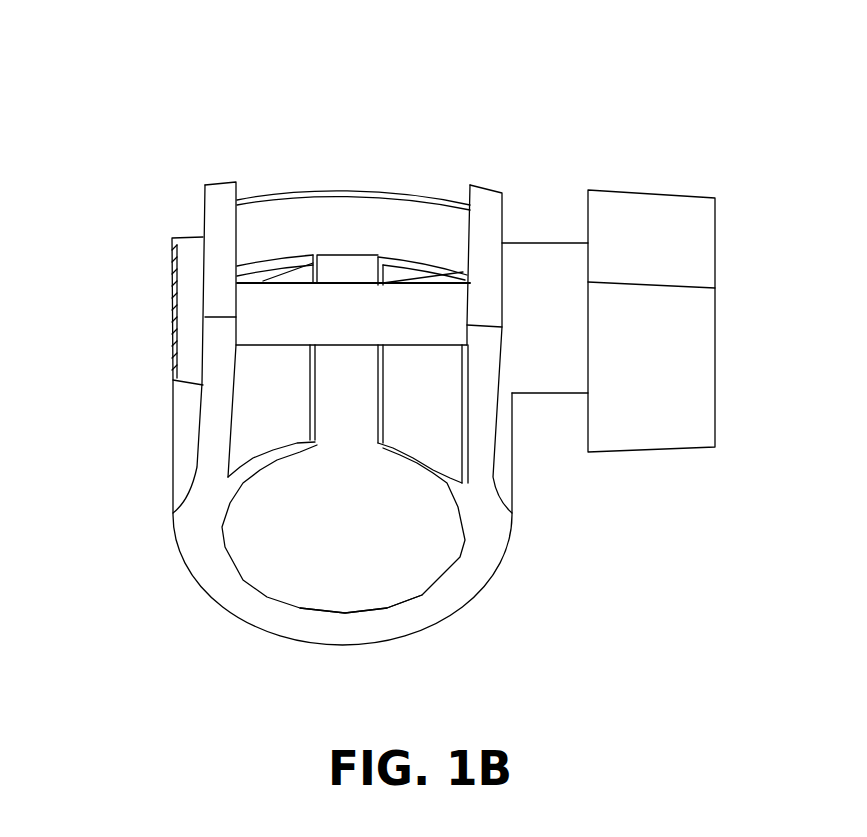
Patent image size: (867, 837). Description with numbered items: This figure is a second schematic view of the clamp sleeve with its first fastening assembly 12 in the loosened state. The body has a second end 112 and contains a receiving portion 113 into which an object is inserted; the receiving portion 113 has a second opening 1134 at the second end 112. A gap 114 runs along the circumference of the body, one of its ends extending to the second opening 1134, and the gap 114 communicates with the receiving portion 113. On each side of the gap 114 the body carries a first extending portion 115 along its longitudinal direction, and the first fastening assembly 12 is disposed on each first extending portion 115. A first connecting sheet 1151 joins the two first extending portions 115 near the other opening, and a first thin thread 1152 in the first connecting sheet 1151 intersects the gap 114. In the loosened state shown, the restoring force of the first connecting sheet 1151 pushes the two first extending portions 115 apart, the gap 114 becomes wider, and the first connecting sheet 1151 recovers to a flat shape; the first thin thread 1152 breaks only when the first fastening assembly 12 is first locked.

The first fastening assembly 12 is at (258, 297).
The second end 112 is at (512, 530).
The receiving portion 113 is at (277, 515).
The second opening 1134 is at (422, 595).
The gap 114 is at (351, 268).
The first extending portion 115 is at (222, 203).
The first connecting sheet 1151 is at (280, 218).
The first thin thread 1152 is at (440, 270).